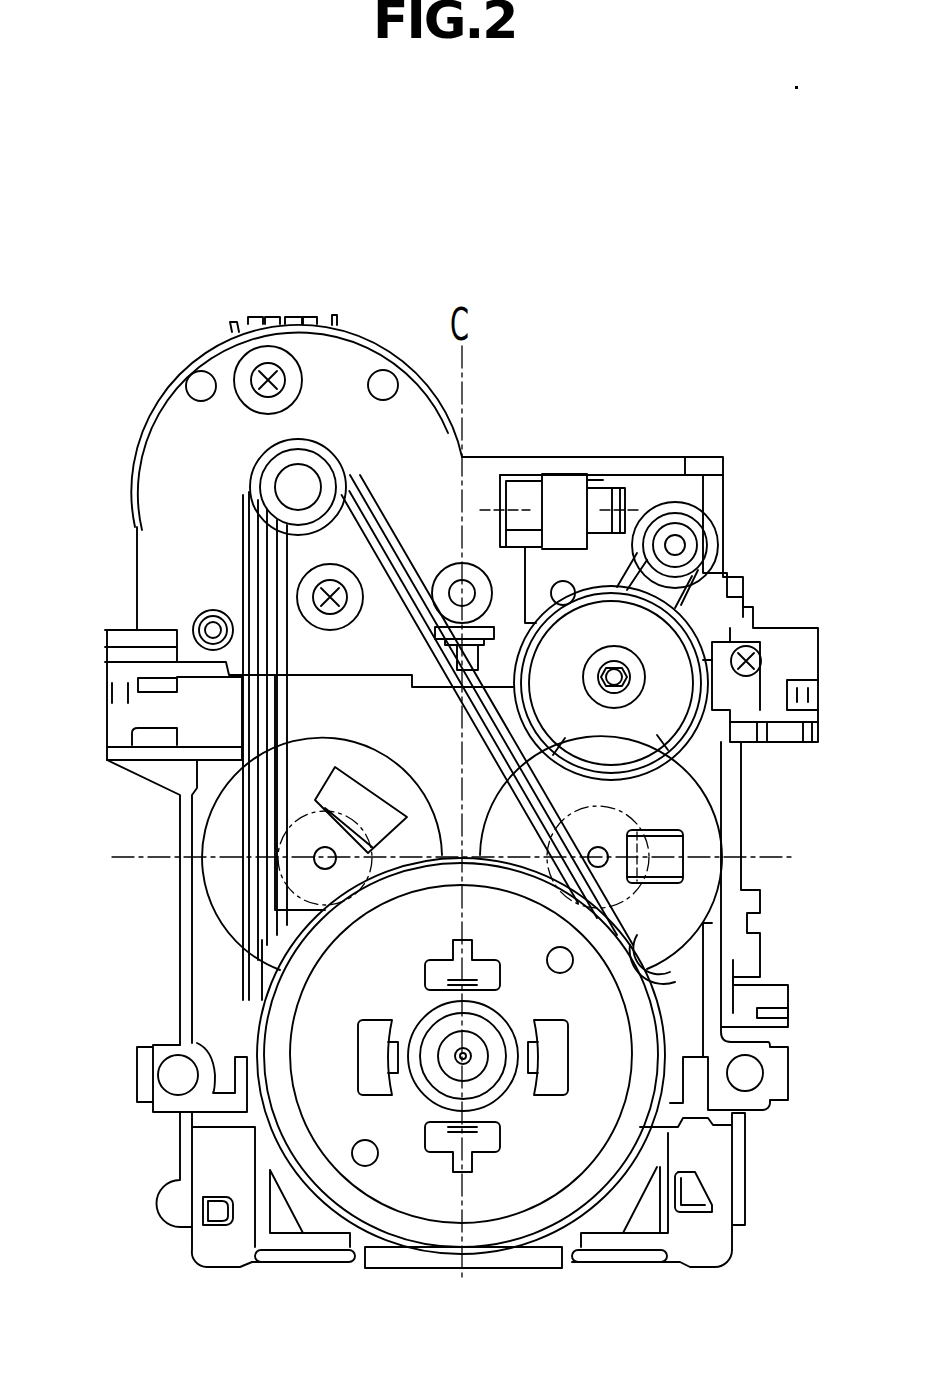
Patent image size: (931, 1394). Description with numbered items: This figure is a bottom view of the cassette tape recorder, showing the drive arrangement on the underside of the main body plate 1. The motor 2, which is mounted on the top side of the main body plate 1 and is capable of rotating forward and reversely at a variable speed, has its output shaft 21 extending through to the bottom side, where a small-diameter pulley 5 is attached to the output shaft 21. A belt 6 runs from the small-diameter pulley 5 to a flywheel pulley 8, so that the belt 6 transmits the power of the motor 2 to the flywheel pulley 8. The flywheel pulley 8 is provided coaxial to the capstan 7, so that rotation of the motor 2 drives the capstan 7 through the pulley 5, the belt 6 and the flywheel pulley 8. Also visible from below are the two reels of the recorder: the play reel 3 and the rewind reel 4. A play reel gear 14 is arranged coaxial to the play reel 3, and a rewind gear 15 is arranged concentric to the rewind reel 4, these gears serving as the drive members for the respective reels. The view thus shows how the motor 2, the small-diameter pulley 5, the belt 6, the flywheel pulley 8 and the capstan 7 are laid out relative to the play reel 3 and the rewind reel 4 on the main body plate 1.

The main body plate 1 is at (512, 457).
The motor 2 is at (155, 410).
The output shaft 21 is at (296, 484).
The play reel 3 is at (665, 852).
The rewind reel 4 is at (318, 856).
The small-diameter pulley 5 is at (263, 488).
The belt 6 is at (265, 570).
The capstan 7 is at (458, 1052).
The flywheel pulley 8 is at (275, 1043).
The play reel gear 14 is at (655, 952).
The rewind gear 15 is at (275, 952).